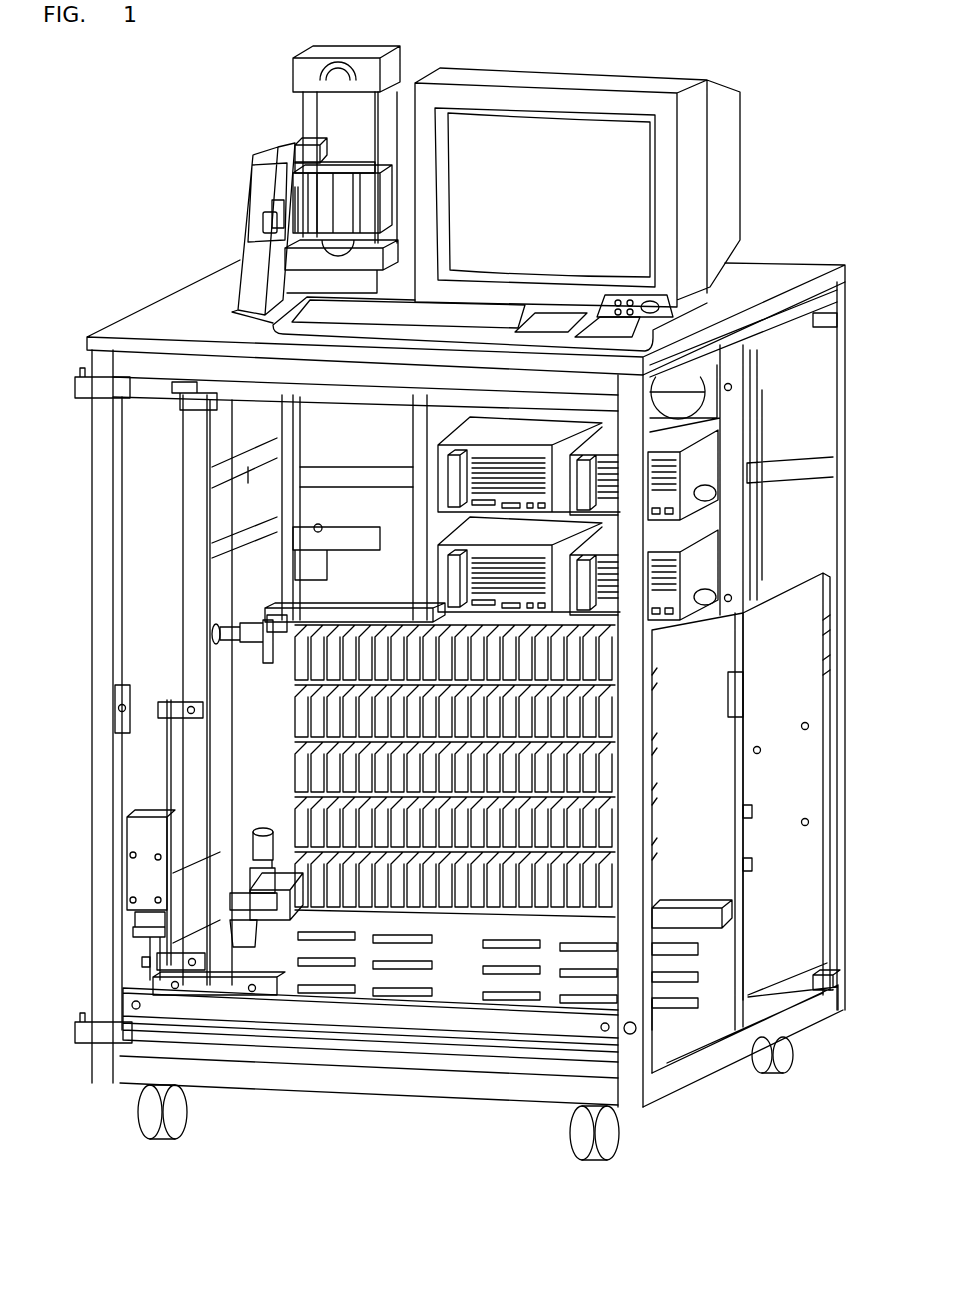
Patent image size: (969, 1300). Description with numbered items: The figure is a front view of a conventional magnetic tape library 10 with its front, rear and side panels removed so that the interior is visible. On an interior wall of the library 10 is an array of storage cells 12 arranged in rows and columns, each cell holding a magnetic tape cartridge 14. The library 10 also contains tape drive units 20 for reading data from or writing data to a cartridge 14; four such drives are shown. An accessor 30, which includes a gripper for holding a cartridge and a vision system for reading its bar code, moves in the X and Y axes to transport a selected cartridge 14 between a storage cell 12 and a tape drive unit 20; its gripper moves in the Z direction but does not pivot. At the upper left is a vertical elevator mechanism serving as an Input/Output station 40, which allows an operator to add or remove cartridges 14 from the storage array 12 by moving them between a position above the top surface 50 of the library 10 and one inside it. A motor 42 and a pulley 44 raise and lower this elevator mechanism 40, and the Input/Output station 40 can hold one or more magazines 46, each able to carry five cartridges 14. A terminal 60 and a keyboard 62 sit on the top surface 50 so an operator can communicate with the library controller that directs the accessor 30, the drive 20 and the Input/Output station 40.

The magnetic tape library 10 is at (370, 1182).
The storage cells 12 is at (293, 792).
The magnetic tape cartridges 14 is at (297, 200).
The tape drive unit 20 is at (693, 457).
The accessor 30 is at (257, 837).
The Input/Output station 40 is at (292, 68).
The motor 42 is at (235, 633).
The pulley 44 is at (263, 220).
The magazine 46 is at (327, 175).
The top surface 50 is at (163, 313).
The terminal 60 is at (743, 135).
The keyboard 62 is at (680, 327).